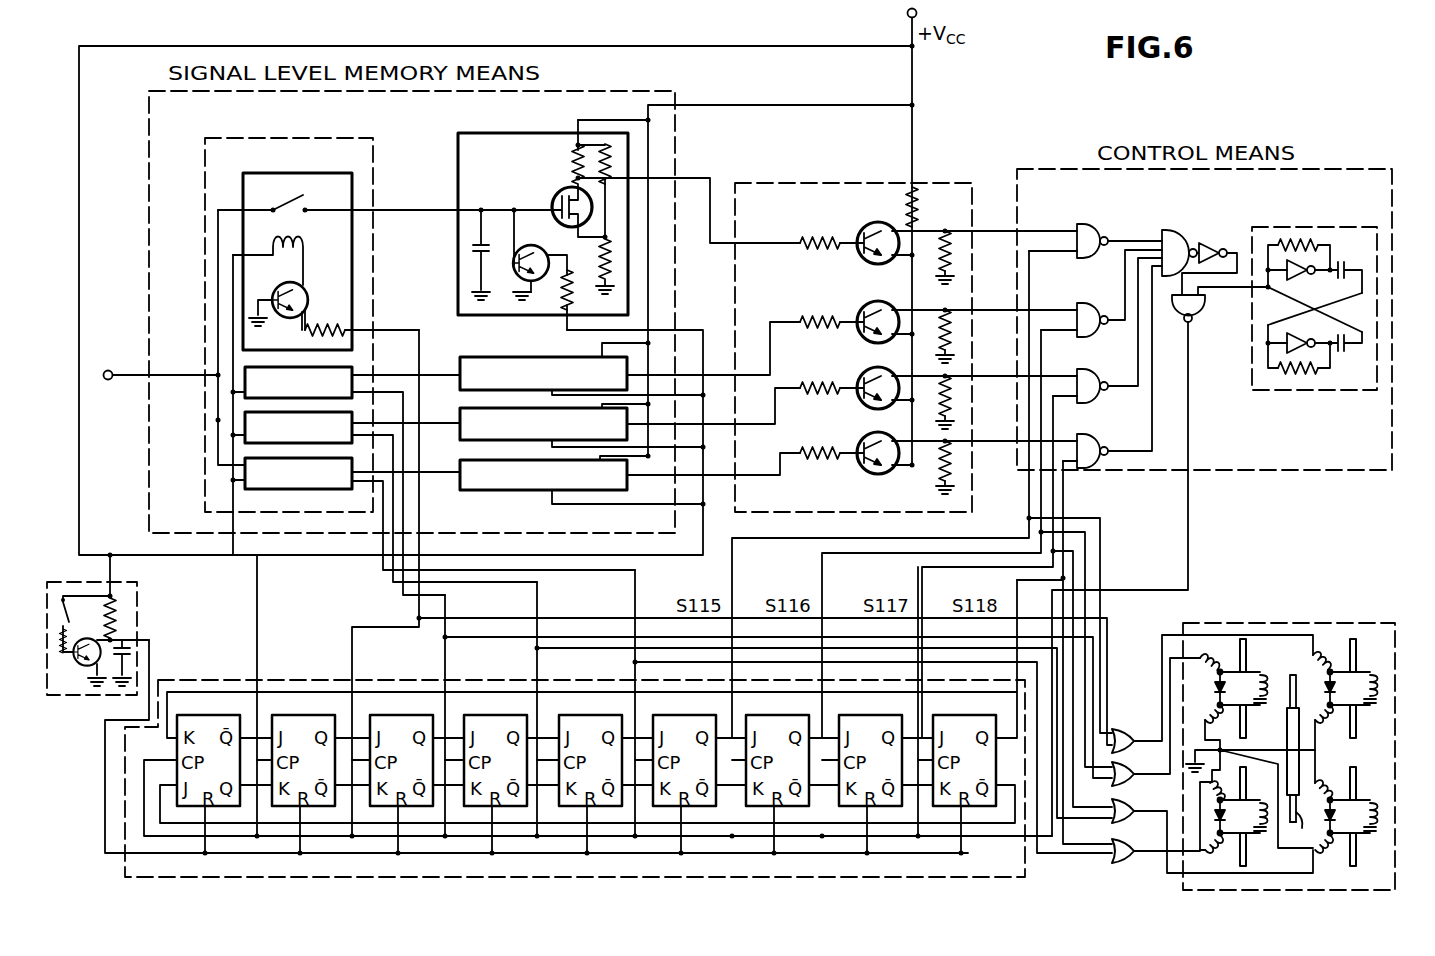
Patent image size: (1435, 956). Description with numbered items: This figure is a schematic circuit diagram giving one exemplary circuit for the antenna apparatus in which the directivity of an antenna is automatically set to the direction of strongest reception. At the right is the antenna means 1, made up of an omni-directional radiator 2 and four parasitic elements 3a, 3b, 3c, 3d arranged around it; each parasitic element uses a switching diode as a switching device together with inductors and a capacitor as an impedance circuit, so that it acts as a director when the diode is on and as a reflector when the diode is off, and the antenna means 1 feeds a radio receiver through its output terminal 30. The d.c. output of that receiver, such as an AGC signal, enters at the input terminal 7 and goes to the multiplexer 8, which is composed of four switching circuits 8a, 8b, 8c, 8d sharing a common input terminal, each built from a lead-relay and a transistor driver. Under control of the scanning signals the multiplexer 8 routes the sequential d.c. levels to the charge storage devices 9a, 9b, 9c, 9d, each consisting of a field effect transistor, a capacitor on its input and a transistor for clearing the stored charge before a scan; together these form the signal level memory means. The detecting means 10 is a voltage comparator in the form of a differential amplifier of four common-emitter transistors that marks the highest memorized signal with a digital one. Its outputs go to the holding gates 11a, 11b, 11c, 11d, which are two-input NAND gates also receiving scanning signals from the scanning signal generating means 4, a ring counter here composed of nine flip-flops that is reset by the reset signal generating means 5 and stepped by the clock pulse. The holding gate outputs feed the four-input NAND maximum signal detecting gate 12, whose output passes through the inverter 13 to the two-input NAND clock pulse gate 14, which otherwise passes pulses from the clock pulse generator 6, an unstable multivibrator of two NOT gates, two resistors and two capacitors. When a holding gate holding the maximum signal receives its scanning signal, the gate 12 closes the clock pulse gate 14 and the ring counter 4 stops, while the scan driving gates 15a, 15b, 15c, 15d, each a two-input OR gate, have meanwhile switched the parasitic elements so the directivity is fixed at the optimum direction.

The antenna means 1 is at (1385, 624).
The omni-directional radiator 2 is at (1296, 712).
The parasitic element 3a is at (1247, 664).
The parasitic element 3b is at (1352, 666).
The parasitic element 3c is at (1352, 795).
The parasitic element 3d is at (1244, 795).
The scanning signal generating means 4 is at (396, 879).
The reset signal generating means 5 is at (137, 602).
The clock pulse generator 6 is at (1314, 294).
The input terminal 7 is at (159, 393).
The multiplexer 8 is at (371, 155).
The switching circuit 8a is at (329, 173).
The switching circuit 8b is at (352, 481).
The switching circuit 8c is at (391, 497).
The switching circuit 8d is at (440, 514).
The charge storage device 9a is at (508, 132).
The charge storage device 9b is at (630, 358).
The charge storage device 9c is at (630, 417).
The charge storage device 9d is at (630, 478).
The detecting means 10 is at (960, 182).
The holding gate 11a is at (1088, 226).
The holding gate 11b is at (1088, 304).
The holding gate 11c is at (1088, 372).
The holding gate 11d is at (1090, 437).
The maximum signal detecting gate 12 is at (1170, 234).
The inverter 13 is at (1204, 241).
The clock pulse gate 14 is at (1195, 318).
The scan driving gate 15a is at (1127, 730).
The scan driving gate 15b is at (1135, 772).
The scan driving gate 15c is at (1135, 806).
The scan driving gate 15d is at (1135, 848).
The output terminal 30 is at (1293, 836).